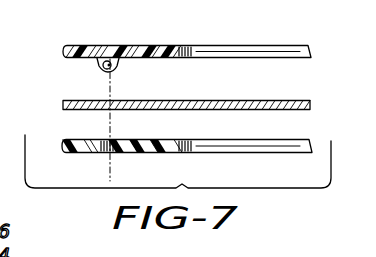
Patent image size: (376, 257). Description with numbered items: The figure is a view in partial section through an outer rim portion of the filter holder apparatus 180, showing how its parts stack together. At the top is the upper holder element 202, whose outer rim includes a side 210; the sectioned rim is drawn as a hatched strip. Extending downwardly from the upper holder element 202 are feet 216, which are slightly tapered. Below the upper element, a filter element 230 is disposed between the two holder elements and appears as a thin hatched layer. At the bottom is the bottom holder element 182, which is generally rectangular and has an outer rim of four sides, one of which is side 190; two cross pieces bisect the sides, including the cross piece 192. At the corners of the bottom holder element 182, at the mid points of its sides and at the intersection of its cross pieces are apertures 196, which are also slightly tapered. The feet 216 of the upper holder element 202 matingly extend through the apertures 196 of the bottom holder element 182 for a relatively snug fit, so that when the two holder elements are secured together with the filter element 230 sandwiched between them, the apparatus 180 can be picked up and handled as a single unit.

The filter holder apparatus 180 is at (134, 42).
The upper holder element 202 is at (102, 46).
The side 210 is at (160, 59).
The feet 216 is at (101, 66).
The filter element 230 is at (231, 100).
The side 190 is at (156, 154).
The bottom holder element 182 is at (95, 153).
The apertures 196 is at (100, 138).
The cross piece 192 is at (237, 154).